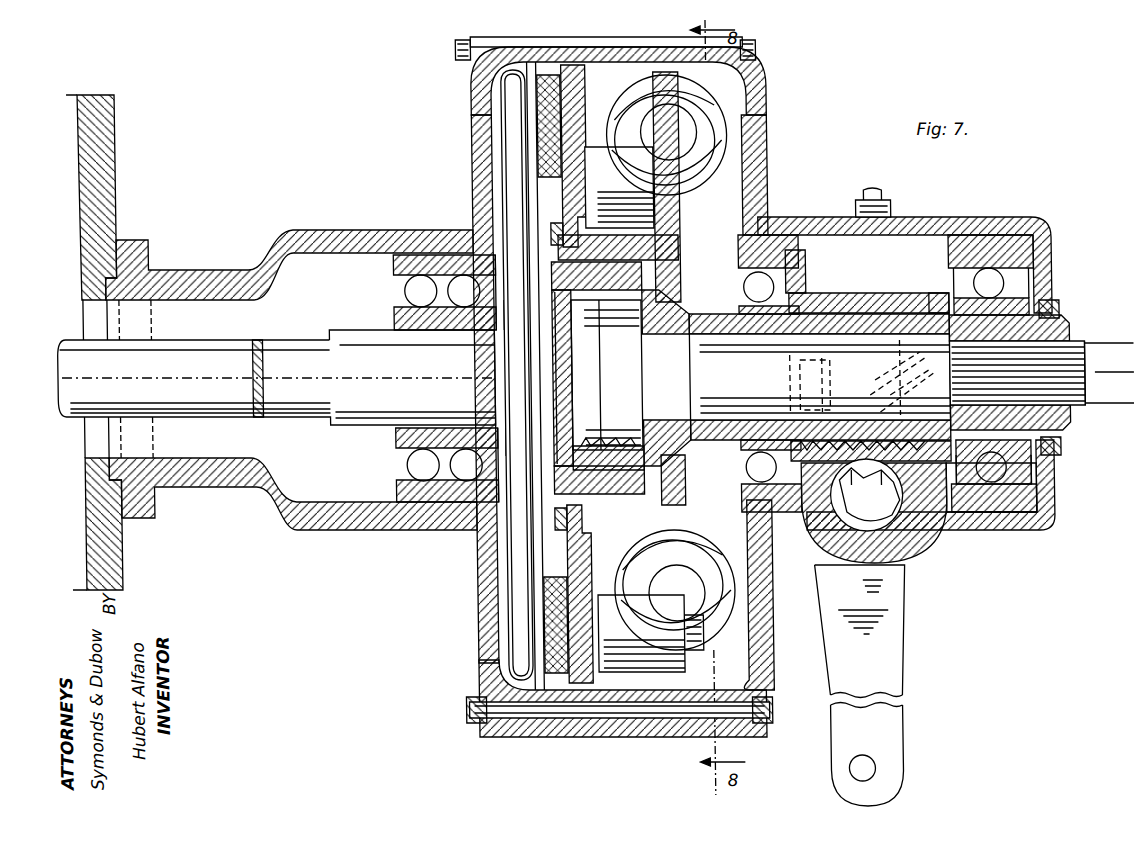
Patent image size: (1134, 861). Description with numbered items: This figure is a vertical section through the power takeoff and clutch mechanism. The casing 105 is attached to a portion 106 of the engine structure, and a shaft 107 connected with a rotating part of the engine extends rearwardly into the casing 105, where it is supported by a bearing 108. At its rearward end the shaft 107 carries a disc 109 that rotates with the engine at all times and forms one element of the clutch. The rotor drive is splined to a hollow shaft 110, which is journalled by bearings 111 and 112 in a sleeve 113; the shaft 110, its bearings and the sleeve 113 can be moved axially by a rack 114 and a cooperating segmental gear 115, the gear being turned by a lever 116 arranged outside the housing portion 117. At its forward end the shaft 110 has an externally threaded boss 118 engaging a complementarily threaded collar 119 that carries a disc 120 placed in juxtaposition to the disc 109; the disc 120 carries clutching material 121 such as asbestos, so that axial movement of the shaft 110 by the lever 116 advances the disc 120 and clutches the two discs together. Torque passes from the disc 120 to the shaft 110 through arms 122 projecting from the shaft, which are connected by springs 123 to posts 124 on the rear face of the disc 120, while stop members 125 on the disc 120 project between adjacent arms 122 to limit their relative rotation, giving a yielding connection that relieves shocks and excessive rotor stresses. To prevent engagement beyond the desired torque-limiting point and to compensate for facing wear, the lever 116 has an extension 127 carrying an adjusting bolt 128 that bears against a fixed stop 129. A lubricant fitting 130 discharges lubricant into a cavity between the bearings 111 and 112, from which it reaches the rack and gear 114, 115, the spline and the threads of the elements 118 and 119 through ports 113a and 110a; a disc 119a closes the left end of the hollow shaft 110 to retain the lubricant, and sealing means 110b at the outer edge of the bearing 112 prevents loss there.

The casing 105 is at (345, 236).
The portion of the engine structure 106 is at (100, 189).
The shaft 107 is at (300, 400).
The bearing 108 is at (428, 470).
The disc 109 is at (519, 600).
The hollow shaft 110 is at (1056, 440).
The port 110a is at (882, 300).
The lubricant sealing means 110b is at (1052, 308).
The bearing 111 is at (762, 272).
The bearing 112 is at (1020, 282).
The sleeve 113 is at (868, 320).
The port 113a is at (855, 283).
The rack 114 is at (935, 510).
The segmental gear 115 is at (932, 522).
The lever 116 is at (895, 718).
The housing portion 117 is at (1010, 528).
The externally threaded boss 118 is at (606, 455).
The threaded collar 119 is at (598, 300).
The disc 119a is at (556, 345).
The disc 120 is at (575, 80).
The clutching material 121 is at (550, 112).
The arms 122 is at (674, 245).
The springs 123 is at (722, 128).
The posts 124 is at (595, 178).
The stop members 125 is at (655, 252).
The extension 127 is at (910, 300).
The adjusting bolt 128 is at (888, 395).
The fixed stop 129 is at (815, 383).
The lubricant fitting 130 is at (888, 205).